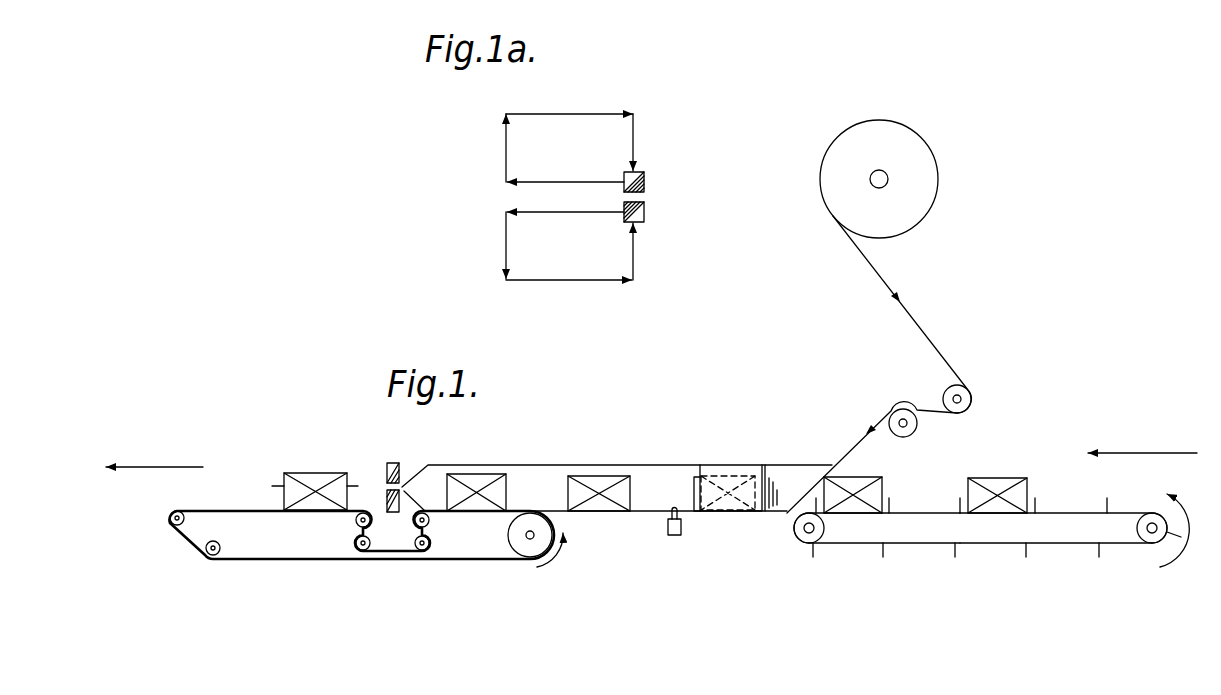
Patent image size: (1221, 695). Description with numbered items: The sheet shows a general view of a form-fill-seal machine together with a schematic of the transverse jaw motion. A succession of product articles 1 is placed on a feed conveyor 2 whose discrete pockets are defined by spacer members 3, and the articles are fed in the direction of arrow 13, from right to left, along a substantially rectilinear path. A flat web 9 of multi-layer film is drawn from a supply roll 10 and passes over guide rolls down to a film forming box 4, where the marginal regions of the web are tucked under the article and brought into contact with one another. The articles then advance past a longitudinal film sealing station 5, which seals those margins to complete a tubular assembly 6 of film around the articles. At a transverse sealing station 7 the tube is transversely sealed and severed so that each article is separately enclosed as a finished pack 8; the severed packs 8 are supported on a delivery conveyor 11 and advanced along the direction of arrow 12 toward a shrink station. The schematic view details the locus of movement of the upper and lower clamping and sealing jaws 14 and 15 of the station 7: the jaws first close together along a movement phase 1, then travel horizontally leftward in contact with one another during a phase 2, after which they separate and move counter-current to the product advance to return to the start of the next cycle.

In FIG. 1A, the product articles 1 is at (635, 260).
In FIG. 1A, the feed conveyor 2 is at (555, 213).
In FIG. 1, the feed conveyor 2 is at (859, 547).
In FIG. 1A, the spacer members 3 is at (504, 246).
In FIG. 1, the spacer members 3 is at (955, 550).
In FIG. 1A, the film forming box 4 is at (556, 282).
In FIG. 1, the film forming box 4 is at (784, 460).
In FIG. 1, the longitudinal film sealing station 5 is at (671, 537).
In FIG. 1, the tubular assembly 6 is at (550, 464).
In FIG. 1A, the transverse sealing station 7 is at (661, 165).
In FIG. 1, the transverse sealing station 7 is at (397, 527).
In FIG. 1, the finished packs 8 is at (302, 472).
In FIG. 1, the flat web 9 is at (935, 338).
In FIG. 1, the supply roll 10 is at (920, 143).
In FIG. 1, the delivery conveyor 11 is at (259, 560).
In FIG. 1, the arrow 12 is at (166, 467).
In FIG. 1, the arrow 13 is at (1148, 452).
In FIG. 1A, the upper sealing jaw 14 is at (646, 182).
In FIG. 1A, the lower sealing jaw 15 is at (646, 210).